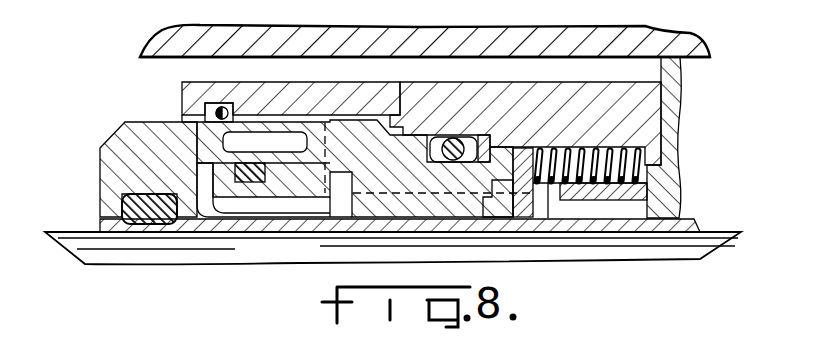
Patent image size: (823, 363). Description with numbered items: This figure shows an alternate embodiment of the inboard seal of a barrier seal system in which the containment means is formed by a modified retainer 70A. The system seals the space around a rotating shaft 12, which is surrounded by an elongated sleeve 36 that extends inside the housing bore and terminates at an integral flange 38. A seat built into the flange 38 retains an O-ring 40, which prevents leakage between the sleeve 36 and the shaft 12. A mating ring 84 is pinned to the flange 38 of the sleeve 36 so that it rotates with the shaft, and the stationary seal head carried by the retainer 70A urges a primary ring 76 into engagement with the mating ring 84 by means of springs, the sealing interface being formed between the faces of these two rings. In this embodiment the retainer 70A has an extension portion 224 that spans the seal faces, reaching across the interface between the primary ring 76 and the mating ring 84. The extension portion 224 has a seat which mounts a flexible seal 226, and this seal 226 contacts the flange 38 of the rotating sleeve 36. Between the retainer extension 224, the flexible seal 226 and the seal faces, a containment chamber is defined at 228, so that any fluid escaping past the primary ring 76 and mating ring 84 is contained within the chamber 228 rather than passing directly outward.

The rotating shaft 12 is at (561, 250).
The sleeve 36 is at (643, 231).
The flange 38 is at (118, 174).
The O-ring 40 is at (160, 216).
The modified retainer 70A is at (648, 114).
The primary ring 76 is at (377, 183).
The mating ring 84 is at (280, 200).
The extension portion 224 is at (293, 90).
The flexible seal 226 is at (220, 106).
The containment chamber 228 is at (427, 83).